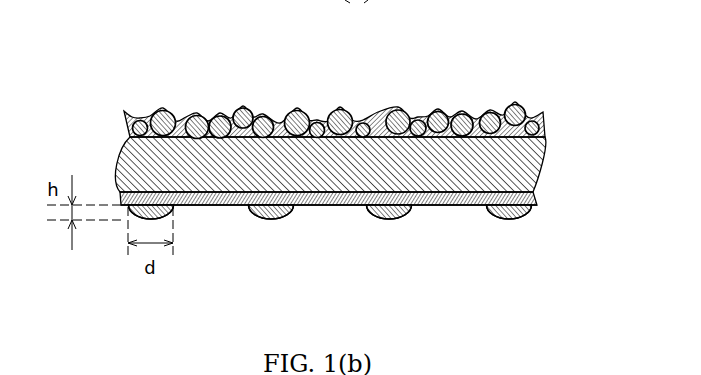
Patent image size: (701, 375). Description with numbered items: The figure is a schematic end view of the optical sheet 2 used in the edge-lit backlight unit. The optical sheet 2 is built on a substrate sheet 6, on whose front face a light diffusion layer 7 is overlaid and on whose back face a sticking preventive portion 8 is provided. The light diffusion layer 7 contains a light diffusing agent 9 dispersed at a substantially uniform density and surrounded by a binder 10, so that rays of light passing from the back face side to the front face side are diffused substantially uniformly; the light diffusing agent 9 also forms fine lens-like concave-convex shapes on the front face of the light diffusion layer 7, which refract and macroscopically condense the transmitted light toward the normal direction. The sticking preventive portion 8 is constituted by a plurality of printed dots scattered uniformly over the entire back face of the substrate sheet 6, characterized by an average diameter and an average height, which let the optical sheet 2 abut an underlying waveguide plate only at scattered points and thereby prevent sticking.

The optical sheet 2 is at (367, 129).
The substrate sheet 6 is at (533, 171).
The light diffusion layer 7 is at (372, 102).
The sticking preventive portion 8 is at (544, 217).
The light diffusing agent 9 is at (224, 112).
The binder 10 is at (372, 122).